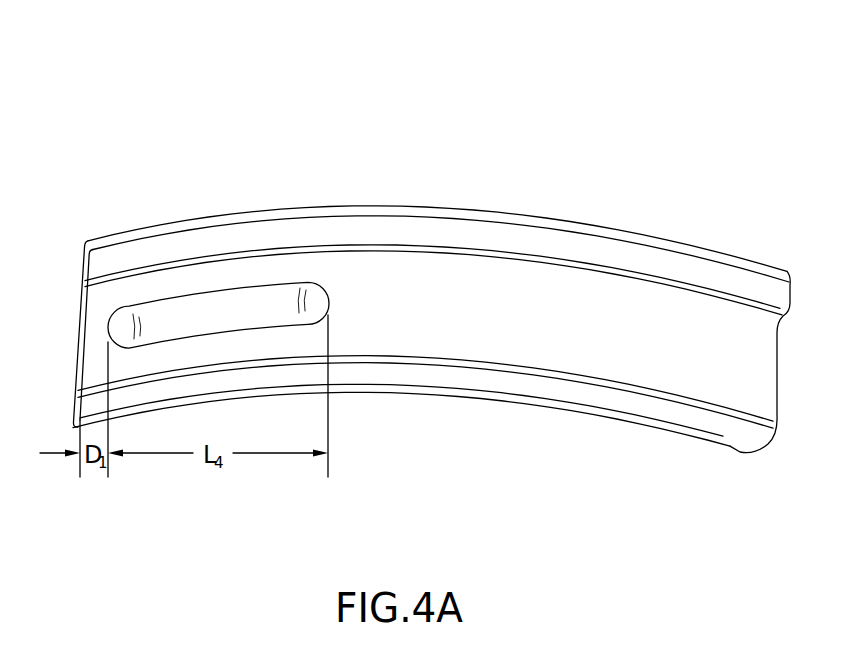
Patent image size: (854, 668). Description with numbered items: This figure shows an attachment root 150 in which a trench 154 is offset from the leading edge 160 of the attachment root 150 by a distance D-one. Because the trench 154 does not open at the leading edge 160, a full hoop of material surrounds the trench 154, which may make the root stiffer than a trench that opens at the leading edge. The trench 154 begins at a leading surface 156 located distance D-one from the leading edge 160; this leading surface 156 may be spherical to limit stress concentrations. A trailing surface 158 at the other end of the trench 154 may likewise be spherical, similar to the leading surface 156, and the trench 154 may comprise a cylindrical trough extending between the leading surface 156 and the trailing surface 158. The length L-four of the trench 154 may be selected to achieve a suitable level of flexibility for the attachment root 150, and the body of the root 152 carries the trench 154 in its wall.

The attachment root 150 is at (166, 130).
The body 152 is at (399, 267).
The trench 154 is at (245, 303).
The leading surface 156 is at (115, 330).
The trailing surface 158 is at (322, 300).
The leading edge 160 is at (85, 283).